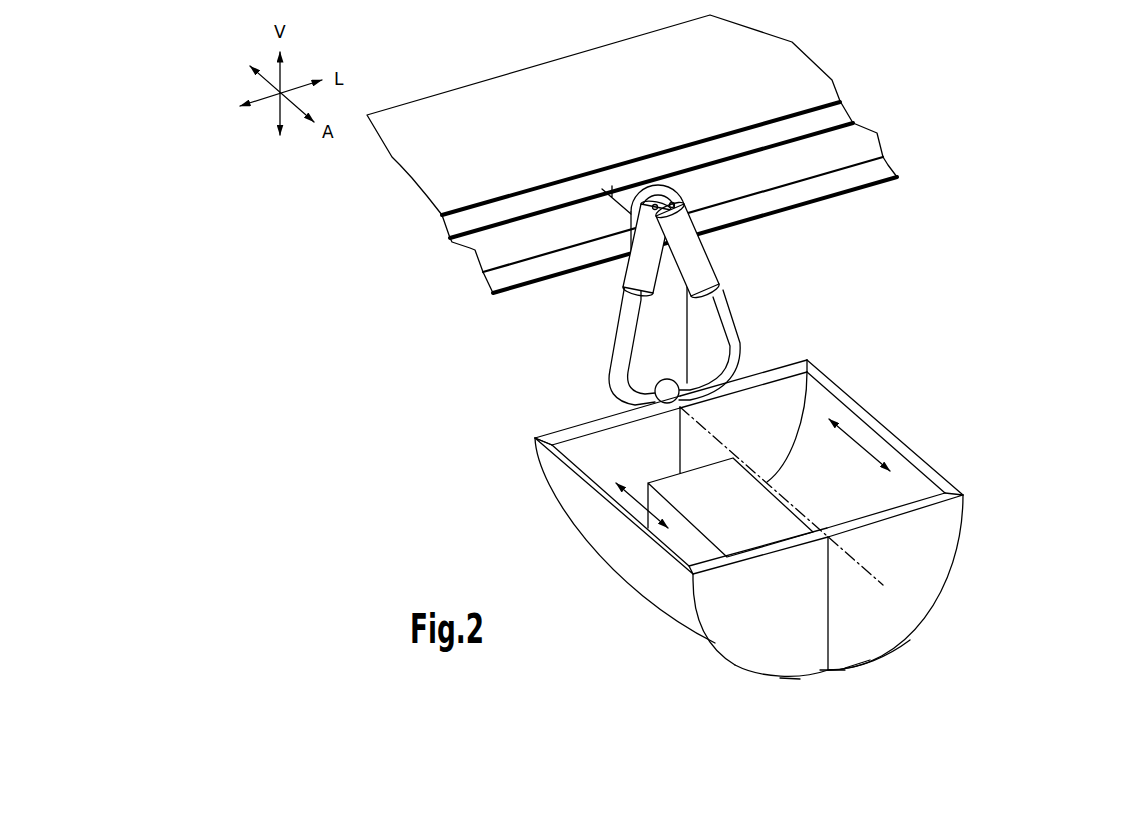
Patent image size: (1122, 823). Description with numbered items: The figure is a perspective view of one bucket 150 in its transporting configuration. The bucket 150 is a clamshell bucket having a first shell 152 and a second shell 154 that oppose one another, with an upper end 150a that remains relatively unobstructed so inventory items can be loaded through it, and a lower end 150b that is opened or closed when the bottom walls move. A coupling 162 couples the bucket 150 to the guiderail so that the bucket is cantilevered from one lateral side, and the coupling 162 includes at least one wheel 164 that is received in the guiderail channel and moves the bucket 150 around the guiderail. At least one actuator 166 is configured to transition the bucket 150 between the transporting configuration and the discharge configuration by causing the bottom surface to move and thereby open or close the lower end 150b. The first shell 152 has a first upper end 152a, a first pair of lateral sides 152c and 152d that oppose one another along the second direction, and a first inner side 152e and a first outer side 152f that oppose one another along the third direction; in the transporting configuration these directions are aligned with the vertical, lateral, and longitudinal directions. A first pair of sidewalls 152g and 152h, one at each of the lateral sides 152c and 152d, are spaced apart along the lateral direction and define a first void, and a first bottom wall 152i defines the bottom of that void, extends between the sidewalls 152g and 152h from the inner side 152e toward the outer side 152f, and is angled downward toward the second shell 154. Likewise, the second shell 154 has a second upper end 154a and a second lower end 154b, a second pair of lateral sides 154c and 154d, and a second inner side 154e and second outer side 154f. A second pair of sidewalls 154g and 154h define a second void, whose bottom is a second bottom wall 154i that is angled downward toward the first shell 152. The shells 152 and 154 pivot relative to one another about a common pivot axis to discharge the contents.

The bucket 150 is at (891, 274).
The upper end 150a is at (512, 422).
The lower end 150b is at (790, 700).
The first shell 152 is at (480, 537).
The first upper end 152a is at (583, 475).
The first lateral side 152c is at (520, 443).
The first lateral side 152d is at (677, 582).
The first inner side 152e is at (817, 687).
The first outer side 152f is at (530, 418).
The first sidewall 152g is at (587, 452).
The first sidewall 152h is at (717, 605).
The first bottom wall 152i is at (723, 660).
The second shell 154 is at (920, 433).
The second upper end 154a is at (863, 408).
The second lower end 154b is at (857, 665).
The second lateral side 154c is at (828, 353).
The second lateral side 154d is at (987, 488).
The second inner side 154e is at (852, 677).
The second outer side 154f is at (803, 340).
The second sidewall 154g is at (757, 407).
The second sidewall 154h is at (927, 573).
The second bottom wall 154i is at (890, 622).
The coupling 162 is at (665, 313).
The wheel 164 is at (625, 200).
The actuator 166 is at (673, 203).